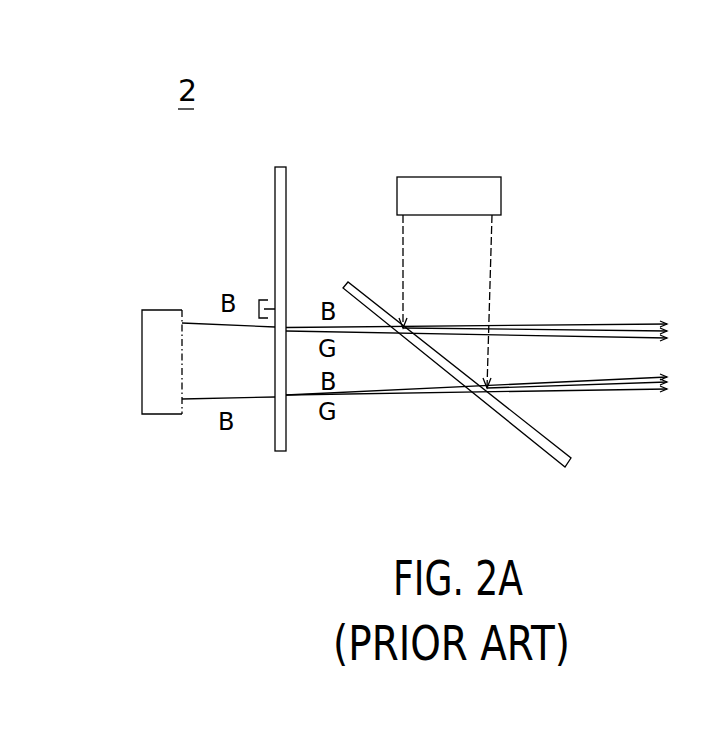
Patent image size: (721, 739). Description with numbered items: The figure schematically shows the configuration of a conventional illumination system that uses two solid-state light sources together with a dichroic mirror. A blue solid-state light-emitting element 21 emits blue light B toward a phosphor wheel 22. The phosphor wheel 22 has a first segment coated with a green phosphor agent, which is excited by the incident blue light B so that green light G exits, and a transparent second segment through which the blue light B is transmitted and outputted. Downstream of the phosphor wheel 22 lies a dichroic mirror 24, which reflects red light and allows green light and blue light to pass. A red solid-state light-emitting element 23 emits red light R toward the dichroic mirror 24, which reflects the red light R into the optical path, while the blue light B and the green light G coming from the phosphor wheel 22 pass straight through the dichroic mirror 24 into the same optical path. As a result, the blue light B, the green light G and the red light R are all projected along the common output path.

The blue solid-state light-emitting element 21 is at (162, 310).
The phosphor wheel 22 is at (279, 166).
The red solid-state light-emitting element 23 is at (447, 177).
The dichroic mirror 24 is at (518, 433).